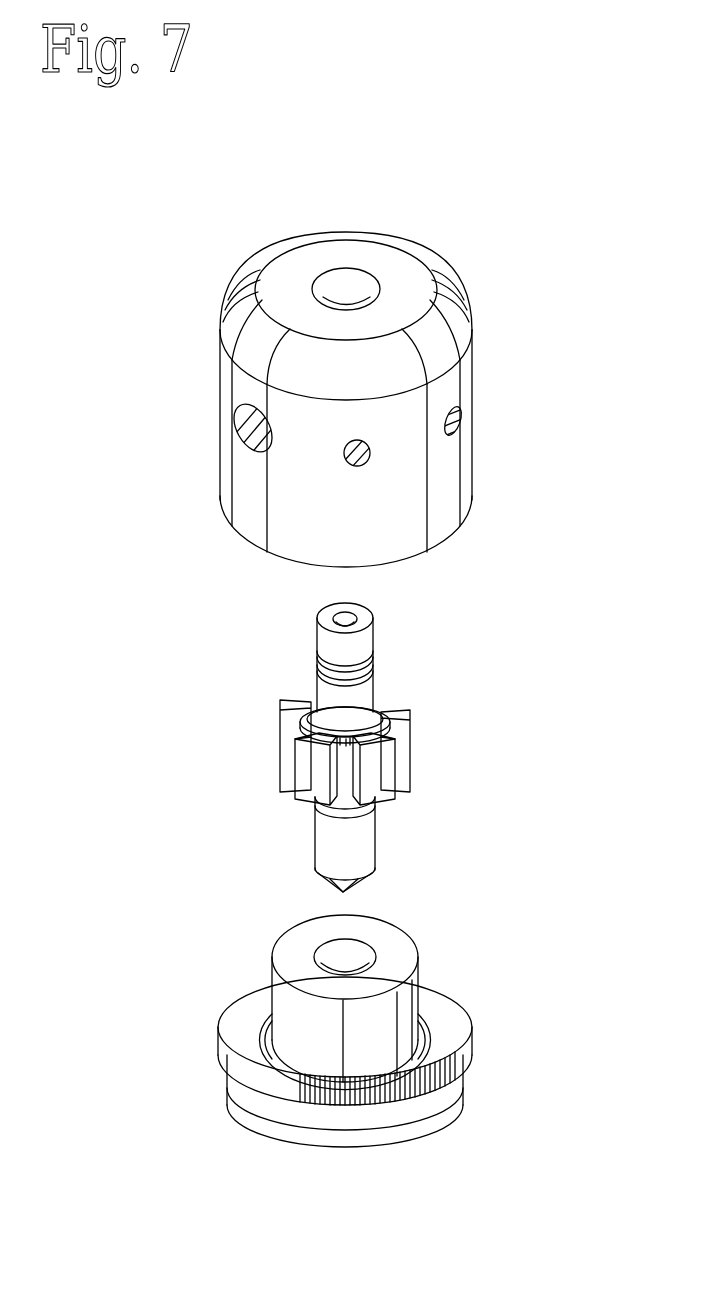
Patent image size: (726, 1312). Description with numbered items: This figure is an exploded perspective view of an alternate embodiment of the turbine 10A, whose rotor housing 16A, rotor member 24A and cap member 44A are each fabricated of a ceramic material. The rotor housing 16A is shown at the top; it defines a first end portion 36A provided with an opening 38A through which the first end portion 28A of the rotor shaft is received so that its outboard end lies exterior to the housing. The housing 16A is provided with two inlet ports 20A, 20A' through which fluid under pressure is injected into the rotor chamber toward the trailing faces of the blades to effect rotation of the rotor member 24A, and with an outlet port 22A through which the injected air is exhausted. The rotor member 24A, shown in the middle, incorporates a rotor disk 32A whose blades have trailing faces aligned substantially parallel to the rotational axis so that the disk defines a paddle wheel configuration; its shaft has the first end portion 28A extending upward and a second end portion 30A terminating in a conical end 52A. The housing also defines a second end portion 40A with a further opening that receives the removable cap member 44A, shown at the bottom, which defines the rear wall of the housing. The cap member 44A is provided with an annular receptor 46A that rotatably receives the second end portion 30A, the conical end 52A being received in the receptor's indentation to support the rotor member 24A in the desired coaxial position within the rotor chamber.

The turbine 10A is at (480, 183).
The rotor housing 16A is at (218, 380).
The inlet port 20A is at (359, 491).
The inlet port 20A' is at (521, 440).
The outlet port 22A is at (240, 433).
The rotor member 24A is at (315, 830).
The first end portion 28A is at (315, 650).
The second end portion 30A is at (376, 853).
The rotor disk 32A is at (280, 732).
The first end portion 36A is at (312, 260).
The opening 38A is at (347, 283).
The second end portion 40A is at (280, 1108).
The cap member 44A is at (307, 1143).
The annular receptor 46A is at (333, 956).
The conical end 52A is at (337, 883).